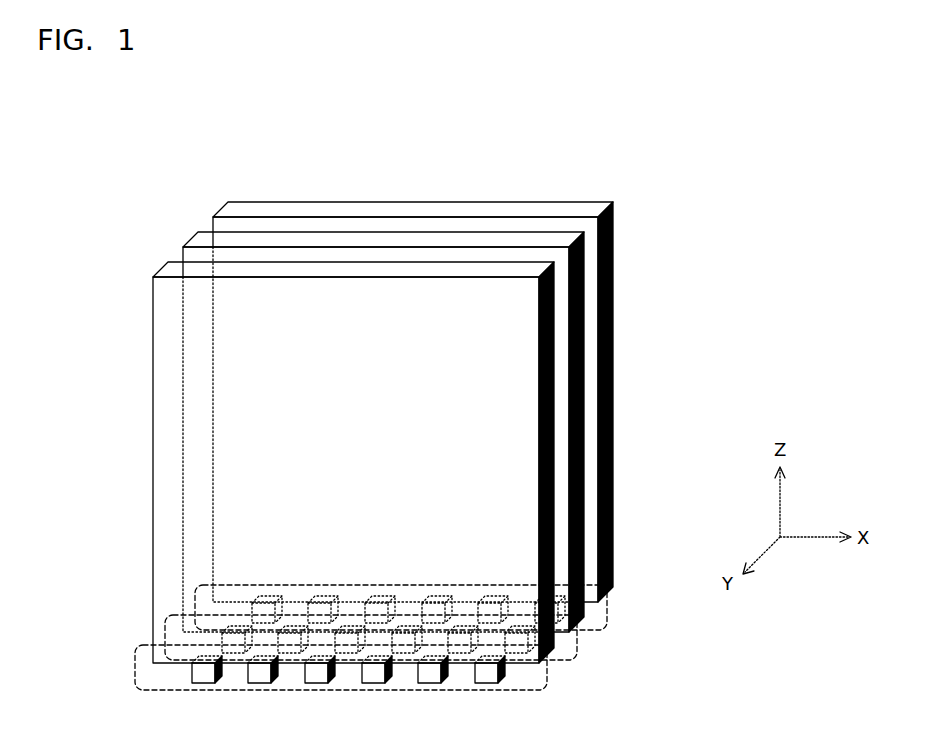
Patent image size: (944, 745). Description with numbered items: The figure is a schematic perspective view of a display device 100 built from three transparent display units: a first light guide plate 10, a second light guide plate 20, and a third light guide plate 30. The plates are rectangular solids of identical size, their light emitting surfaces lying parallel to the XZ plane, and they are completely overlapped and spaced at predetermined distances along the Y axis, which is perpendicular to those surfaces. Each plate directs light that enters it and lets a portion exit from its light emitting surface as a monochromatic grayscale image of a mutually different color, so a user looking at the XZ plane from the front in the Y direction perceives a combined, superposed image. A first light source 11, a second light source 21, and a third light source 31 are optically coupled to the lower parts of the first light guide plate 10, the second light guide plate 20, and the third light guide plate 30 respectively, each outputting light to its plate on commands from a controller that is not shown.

The display device 100 is at (622, 166).
The first light guide plate 10 is at (153, 272).
The second light guide plate 20 is at (183, 242).
The third light guide plate 30 is at (213, 212).
The first light source 11 is at (547, 687).
The second light source 21 is at (577, 657).
The third light source 31 is at (607, 627).